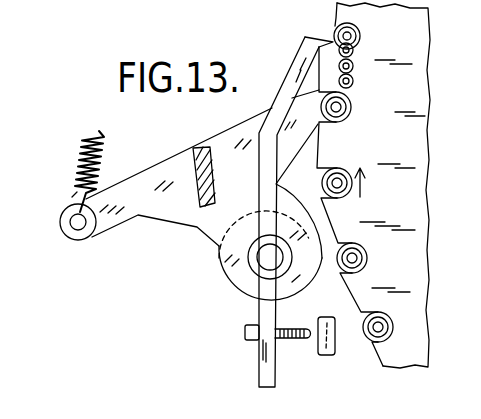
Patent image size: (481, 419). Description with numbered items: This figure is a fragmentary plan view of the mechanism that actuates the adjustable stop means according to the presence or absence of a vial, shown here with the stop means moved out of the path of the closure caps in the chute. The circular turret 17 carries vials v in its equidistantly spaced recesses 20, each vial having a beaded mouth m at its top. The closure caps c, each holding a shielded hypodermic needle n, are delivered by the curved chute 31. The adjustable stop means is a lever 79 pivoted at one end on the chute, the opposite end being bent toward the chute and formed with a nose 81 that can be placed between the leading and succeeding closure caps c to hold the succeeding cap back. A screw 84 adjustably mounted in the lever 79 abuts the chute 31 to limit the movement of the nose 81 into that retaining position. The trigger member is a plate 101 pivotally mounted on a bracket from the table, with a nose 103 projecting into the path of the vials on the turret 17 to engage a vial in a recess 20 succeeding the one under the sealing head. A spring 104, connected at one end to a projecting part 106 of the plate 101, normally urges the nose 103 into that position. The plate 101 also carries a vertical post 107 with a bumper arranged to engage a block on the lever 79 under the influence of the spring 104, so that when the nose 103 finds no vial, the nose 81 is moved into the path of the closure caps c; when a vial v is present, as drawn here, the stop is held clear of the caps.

The circular turret 17 is at (417, 98).
The recesses 20 is at (371, 344).
The curved chute 31 is at (328, 322).
The lever 79 is at (262, 368).
The nose 81 is at (322, 40).
The screw 84 is at (307, 340).
The plate 101 is at (138, 177).
The nose 103 is at (298, 133).
The spring 104 is at (73, 163).
The projecting part 106 is at (107, 226).
The vertical post 107 is at (200, 148).
The hypodermic needle n is at (353, 68).
The closure caps c is at (353, 83).
The beaded mouth m is at (367, 260).
The vials v is at (393, 327).